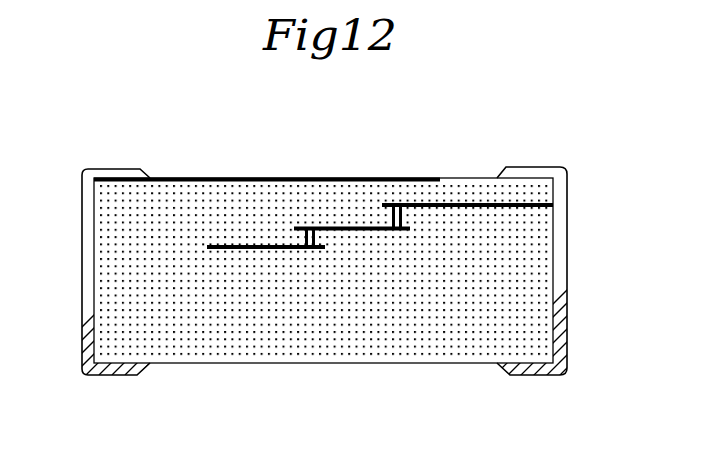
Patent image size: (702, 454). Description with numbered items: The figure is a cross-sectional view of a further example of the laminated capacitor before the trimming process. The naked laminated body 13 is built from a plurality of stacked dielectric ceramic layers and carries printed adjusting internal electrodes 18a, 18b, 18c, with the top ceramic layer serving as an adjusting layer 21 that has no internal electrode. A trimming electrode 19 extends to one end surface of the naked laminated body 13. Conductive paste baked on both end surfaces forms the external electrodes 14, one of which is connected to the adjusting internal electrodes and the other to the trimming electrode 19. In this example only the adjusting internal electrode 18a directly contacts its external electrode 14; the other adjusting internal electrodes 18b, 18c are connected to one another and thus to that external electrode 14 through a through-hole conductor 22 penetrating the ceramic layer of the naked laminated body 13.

The naked laminated body 13 is at (383, 348).
The external electrode 14 is at (527, 172).
The adjusting internal electrode 18a is at (447, 203).
The adjusting internal electrode 18b is at (352, 227).
The adjusting internal electrode 18c is at (233, 246).
The trimming electrode 19 is at (307, 178).
The adjusting layer 21 is at (422, 190).
The through-hole conductor 22 is at (304, 237).